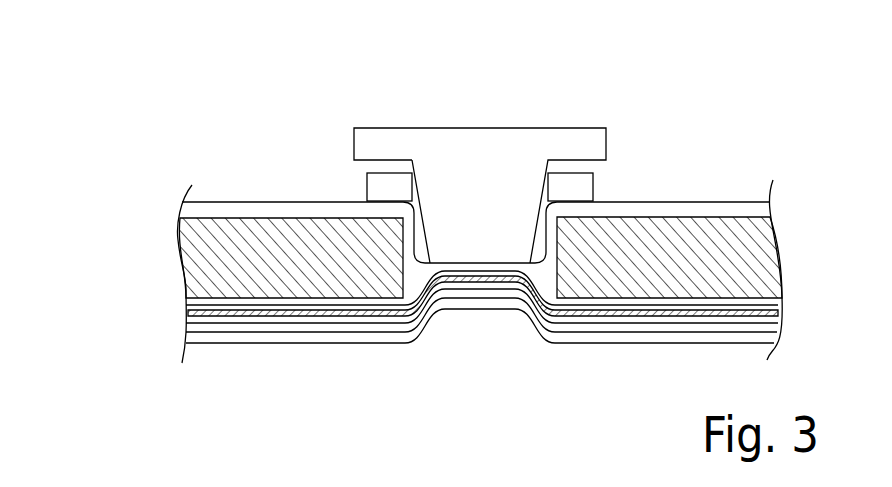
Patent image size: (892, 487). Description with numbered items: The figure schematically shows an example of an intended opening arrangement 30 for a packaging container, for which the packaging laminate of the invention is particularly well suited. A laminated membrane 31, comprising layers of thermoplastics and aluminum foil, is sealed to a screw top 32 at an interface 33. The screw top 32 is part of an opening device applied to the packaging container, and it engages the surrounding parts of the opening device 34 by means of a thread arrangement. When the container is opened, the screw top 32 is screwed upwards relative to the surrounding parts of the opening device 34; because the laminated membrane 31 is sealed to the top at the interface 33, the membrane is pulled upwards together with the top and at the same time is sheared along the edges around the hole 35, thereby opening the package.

The opening arrangement 30 is at (413, 271).
The laminated membrane 31 is at (456, 272).
The screw top 32 is at (488, 157).
The interface 33 is at (500, 264).
The surrounding parts of the opening device 34 is at (380, 188).
The hole 35 is at (423, 255).